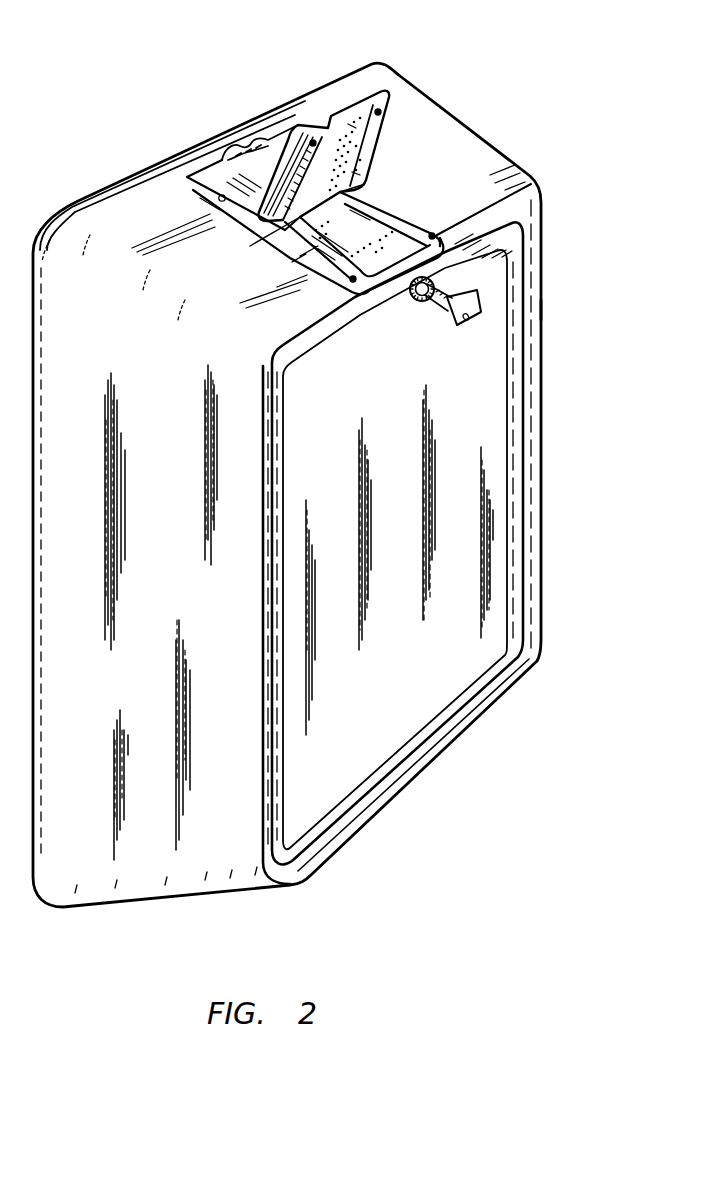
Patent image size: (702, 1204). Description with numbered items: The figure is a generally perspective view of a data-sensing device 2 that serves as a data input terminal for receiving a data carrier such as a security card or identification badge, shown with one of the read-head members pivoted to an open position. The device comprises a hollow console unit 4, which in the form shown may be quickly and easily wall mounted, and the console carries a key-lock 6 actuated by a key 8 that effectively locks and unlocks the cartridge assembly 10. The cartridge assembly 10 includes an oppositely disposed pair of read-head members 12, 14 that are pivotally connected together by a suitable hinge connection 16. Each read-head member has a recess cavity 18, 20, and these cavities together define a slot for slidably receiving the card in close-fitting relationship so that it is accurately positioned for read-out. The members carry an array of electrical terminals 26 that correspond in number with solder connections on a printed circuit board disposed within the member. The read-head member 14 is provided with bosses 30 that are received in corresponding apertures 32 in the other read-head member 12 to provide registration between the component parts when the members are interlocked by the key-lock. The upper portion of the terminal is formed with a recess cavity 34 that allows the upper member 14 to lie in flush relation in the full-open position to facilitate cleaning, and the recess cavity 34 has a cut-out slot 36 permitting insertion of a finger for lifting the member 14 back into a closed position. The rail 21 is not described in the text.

The data-sensing device 2 is at (510, 120).
The hollow console unit 4 is at (493, 483).
The key-lock 6 is at (413, 303).
The key 8 is at (462, 322).
The cartridge assembly 10 is at (420, 212).
The read-head member 12 is at (314, 250).
The read-head member 14 is at (372, 134).
The hinge connection 16 is at (314, 238).
The recess cavity 18 is at (350, 275).
The recess cavity 20 is at (352, 158).
The tray rail 21 is at (416, 240).
The array of electrical terminals 26 is at (350, 128).
The bosses 30 is at (310, 141).
The apertures 32 is at (353, 282).
The recess cavity 34 is at (219, 200).
The cut-out slot 36 is at (232, 148).